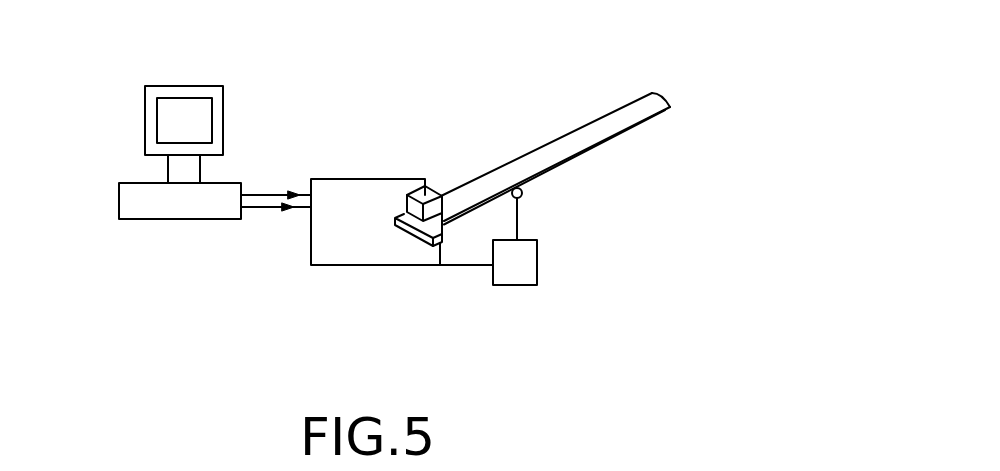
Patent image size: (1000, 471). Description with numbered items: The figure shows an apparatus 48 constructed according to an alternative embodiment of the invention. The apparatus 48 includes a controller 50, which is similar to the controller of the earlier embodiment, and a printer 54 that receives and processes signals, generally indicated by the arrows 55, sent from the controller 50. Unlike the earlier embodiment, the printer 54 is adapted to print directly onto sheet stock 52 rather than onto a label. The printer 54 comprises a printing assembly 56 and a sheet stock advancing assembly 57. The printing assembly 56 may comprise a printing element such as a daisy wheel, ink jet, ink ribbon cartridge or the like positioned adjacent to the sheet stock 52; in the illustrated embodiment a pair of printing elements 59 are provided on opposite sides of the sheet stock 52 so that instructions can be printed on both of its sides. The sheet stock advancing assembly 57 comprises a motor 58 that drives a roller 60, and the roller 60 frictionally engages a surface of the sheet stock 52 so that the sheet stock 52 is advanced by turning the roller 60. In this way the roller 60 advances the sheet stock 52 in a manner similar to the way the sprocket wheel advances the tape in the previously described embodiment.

The apparatus 48 is at (331, 144).
The controller 50 is at (119, 198).
The sheet stock 52 is at (605, 127).
The printer 54 is at (436, 277).
The arrows 55 is at (262, 191).
The printing assembly 56 is at (434, 180).
The sheet stock advancing assembly 57 is at (552, 237).
The motor 58 is at (527, 277).
The printing elements 59 is at (458, 218).
The roller 60 is at (523, 192).